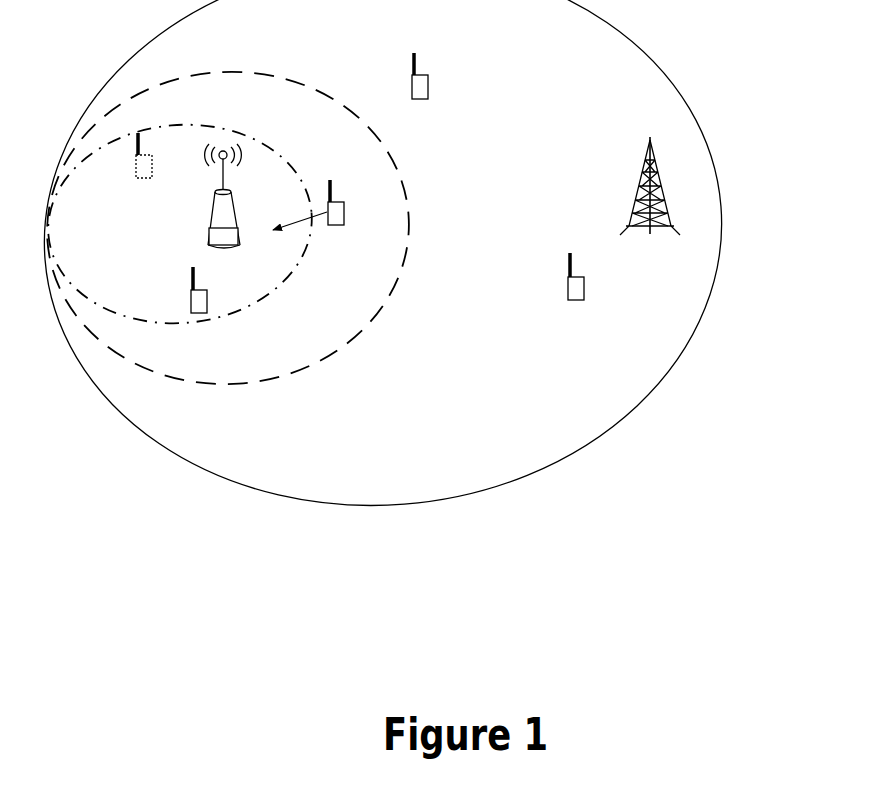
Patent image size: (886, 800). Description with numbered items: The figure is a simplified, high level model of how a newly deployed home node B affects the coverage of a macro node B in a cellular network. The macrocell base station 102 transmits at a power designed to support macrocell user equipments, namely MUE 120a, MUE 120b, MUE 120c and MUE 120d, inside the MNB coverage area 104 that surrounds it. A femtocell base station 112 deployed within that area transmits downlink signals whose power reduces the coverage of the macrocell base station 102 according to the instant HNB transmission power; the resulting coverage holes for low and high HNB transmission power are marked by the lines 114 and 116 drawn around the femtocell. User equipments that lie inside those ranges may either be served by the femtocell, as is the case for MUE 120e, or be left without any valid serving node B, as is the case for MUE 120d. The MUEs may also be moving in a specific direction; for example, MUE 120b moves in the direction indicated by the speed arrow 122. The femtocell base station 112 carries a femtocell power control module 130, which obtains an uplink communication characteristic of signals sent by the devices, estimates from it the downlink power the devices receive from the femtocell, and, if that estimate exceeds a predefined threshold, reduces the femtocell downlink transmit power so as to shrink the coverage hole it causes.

The macrocell base station 102 is at (650, 238).
The MNB coverage area 104 is at (660, 62).
The femtocell base station 112 is at (195, 203).
The coverage hole for low HNB transmission power 114 is at (279, 150).
The coverage hole for high HNB transmission power 116 is at (301, 87).
The MUE 120a is at (420, 102).
The MUE 120b is at (333, 228).
The MUE 120c is at (574, 302).
The MUE 120d is at (132, 163).
The MUE 120e is at (198, 316).
The speed arrow 122 is at (303, 218).
The femtocell power control module 130 is at (223, 236).